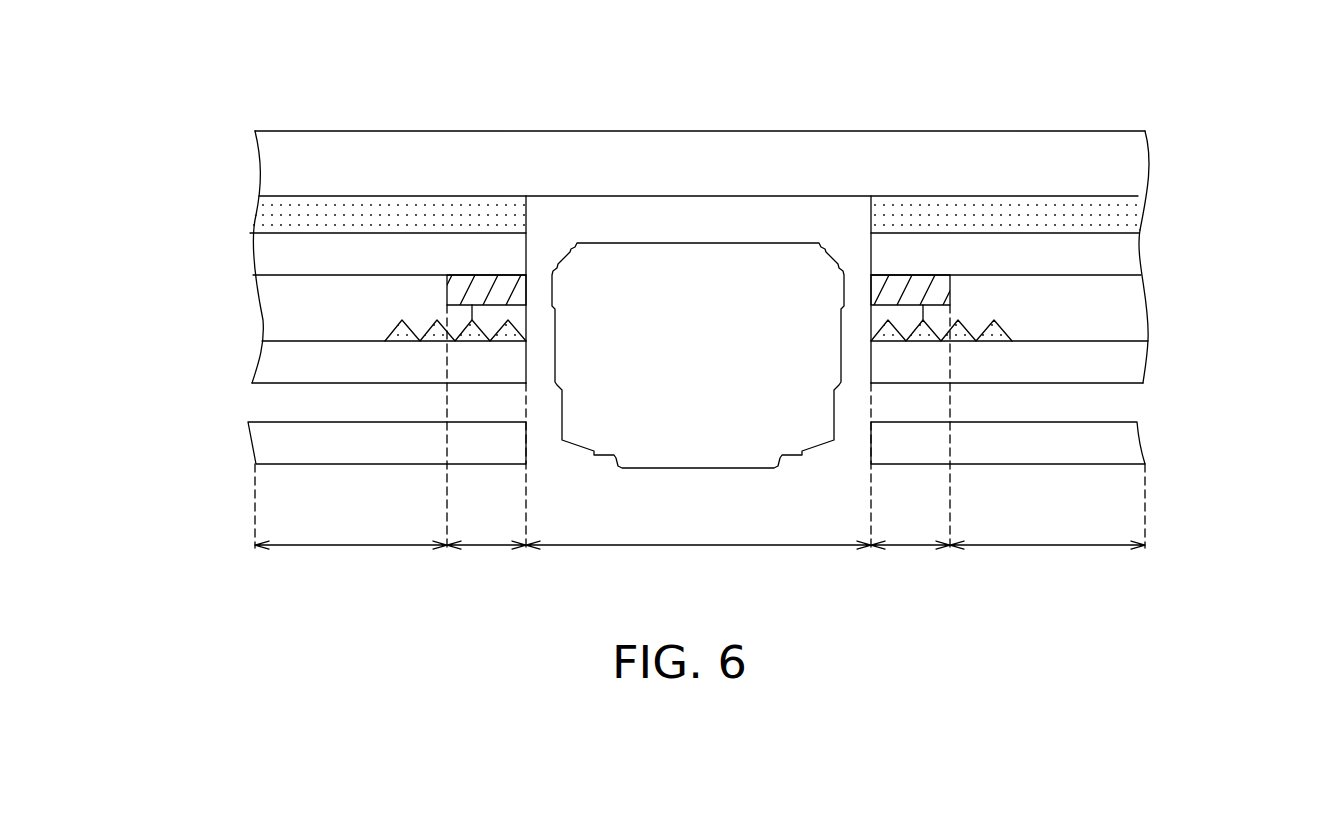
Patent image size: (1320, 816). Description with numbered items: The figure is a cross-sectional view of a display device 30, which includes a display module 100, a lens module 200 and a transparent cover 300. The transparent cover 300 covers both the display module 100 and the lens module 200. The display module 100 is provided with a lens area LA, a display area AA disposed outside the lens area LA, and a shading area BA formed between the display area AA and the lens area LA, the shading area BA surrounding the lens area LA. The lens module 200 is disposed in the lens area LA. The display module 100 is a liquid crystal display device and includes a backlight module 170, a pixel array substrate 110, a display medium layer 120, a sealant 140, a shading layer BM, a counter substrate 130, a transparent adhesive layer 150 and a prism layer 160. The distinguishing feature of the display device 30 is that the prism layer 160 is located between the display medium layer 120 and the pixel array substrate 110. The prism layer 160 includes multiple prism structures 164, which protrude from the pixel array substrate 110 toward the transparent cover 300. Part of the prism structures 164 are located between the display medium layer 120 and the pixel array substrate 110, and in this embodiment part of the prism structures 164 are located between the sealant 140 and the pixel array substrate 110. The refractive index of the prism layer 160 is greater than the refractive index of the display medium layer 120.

The display device 30 is at (1263, 557).
The display module 100 is at (220, 197).
The pixel array substrate 110 is at (1120, 368).
The display medium layer 120 is at (1126, 316).
The counter substrate 130 is at (1128, 256).
The sealant 140 is at (903, 322).
The transparent adhesive layer 150 is at (1133, 215).
The prism layer 160 is at (639, 192).
The prism structures 164 is at (437, 320).
The backlight module 170 is at (1115, 447).
The lens module 200 is at (758, 243).
The transparent cover 300 is at (1133, 147).
The shading layer BM is at (933, 286).
The display area AA is at (700, 506).
The shading area BA is at (698, 427).
The lens area LA is at (698, 466).